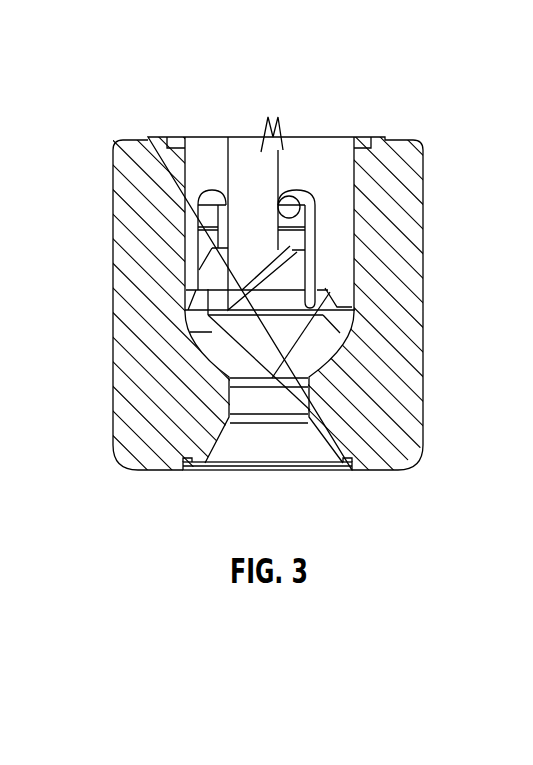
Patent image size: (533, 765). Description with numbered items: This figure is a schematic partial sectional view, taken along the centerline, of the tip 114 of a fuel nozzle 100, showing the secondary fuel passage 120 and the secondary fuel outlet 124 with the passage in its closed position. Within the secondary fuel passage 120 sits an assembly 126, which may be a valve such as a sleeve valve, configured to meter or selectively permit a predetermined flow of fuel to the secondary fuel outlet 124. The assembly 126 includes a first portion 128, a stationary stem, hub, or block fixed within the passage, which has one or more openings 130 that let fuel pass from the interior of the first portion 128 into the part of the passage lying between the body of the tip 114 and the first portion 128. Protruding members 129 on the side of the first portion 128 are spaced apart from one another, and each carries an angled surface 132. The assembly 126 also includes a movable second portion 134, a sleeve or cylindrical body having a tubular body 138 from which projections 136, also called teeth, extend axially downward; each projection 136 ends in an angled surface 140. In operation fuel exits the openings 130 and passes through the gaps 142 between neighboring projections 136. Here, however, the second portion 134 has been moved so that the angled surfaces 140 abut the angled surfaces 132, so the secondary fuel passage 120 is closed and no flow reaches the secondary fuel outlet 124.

The fuel nozzle 100 is at (110, 58).
The tip 114 is at (104, 352).
The secondary fuel passage 120 is at (240, 275).
The secondary fuel outlet 124 is at (202, 478).
The assembly 126 is at (369, 214).
The first portion 128 is at (280, 338).
The members 129 is at (335, 305).
The openings 130 is at (226, 194).
The angled surface 132 is at (276, 203).
The second portion 134 is at (231, 170).
The projections 136 is at (210, 222).
The tubular body 138 is at (344, 150).
The angled surface 140 is at (225, 270).
The gaps 142 is at (222, 206).